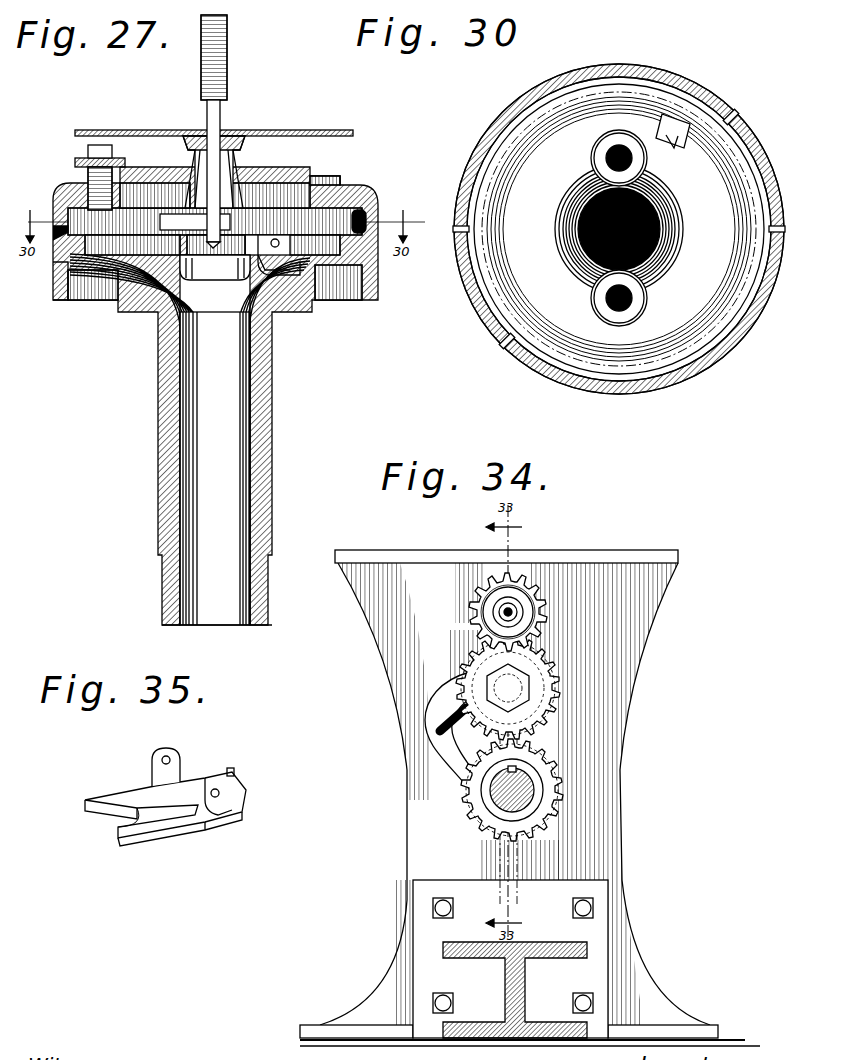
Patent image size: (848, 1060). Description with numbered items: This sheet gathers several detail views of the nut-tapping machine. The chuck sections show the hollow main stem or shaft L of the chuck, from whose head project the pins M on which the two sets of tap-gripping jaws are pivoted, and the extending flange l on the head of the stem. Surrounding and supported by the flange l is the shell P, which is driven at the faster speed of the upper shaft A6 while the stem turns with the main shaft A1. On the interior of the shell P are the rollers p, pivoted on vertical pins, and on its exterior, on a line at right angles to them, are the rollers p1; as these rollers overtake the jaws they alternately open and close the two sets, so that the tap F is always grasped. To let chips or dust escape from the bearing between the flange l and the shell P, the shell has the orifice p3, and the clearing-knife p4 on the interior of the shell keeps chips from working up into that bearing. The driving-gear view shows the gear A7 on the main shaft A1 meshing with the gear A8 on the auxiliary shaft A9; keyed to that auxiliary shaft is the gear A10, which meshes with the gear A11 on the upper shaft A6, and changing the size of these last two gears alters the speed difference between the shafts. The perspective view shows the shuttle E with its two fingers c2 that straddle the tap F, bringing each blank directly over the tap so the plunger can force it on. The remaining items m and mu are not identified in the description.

In FIG. 27, the tap F is at (226, 78).
In FIG. 27, the shell P is at (355, 198).
In FIG. 27, the rollers p1 is at (92, 172).
In FIG. 27, the orifice p3 is at (58, 238).
In FIG. 27, the flange l is at (56, 264).
In FIG. 27, the bracket mu is at (256, 284).
In FIG. 27, the main stem or shaft of the chuck L is at (217, 468).
In FIG. 30, the main stem or shaft of the chuck L is at (627, 229).
In FIG. 30, the upper passage m is at (606, 162).
In FIG. 30, the pins M is at (613, 304).
In FIG. 30, the clearing-knife p4 is at (673, 140).
In FIG. 30, the rollers p is at (727, 346).
In FIG. 34, the main shaft A1 is at (510, 940).
In FIG. 34, the upper shaft A6 is at (500, 611).
In FIG. 34, the gear A11 is at (538, 598).
In FIG. 34, the gear A10 is at (468, 668).
In FIG. 34, the gear A8 is at (546, 652).
In FIG. 34, the auxiliary shaft A9 is at (520, 688).
In FIG. 34, the gear A7 is at (480, 772).
In FIG. 35, the shuttle E is at (200, 822).
In FIG. 35, the fingers c2 is at (120, 832).